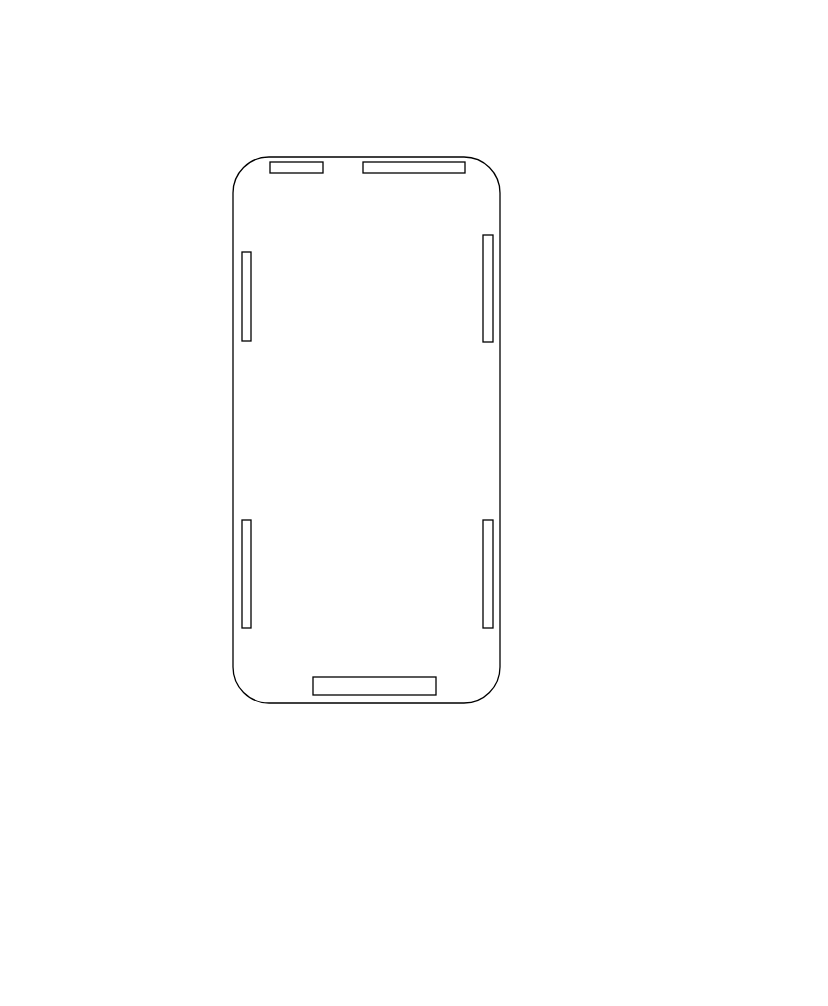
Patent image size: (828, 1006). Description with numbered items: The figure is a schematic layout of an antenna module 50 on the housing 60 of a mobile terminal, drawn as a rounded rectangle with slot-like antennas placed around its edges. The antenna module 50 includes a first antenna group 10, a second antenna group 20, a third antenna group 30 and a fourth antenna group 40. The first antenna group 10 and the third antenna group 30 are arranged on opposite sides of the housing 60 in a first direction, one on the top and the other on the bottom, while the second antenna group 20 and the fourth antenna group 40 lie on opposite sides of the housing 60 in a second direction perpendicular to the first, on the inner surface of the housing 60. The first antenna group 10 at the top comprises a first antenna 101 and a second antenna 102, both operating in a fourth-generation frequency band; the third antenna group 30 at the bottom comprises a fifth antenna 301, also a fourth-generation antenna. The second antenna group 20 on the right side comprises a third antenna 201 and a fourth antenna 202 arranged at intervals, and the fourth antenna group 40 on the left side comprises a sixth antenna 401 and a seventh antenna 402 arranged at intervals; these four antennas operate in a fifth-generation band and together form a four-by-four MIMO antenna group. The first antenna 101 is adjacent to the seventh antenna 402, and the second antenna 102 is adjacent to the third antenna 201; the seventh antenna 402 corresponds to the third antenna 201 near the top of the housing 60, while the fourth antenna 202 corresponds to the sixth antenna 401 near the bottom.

The antenna module 50 is at (313, 52).
The housing 60 is at (247, 213).
The first antenna group 10 is at (455, 70).
The first antenna 101 is at (295, 165).
The second antenna 102 is at (412, 165).
The second antenna group 20 is at (605, 357).
The third antenna 201 is at (487, 310).
The fourth antenna 202 is at (487, 535).
The third antenna group 30 is at (376, 700).
The fifth antenna 301 is at (323, 686).
The fourth antenna group 40 is at (133, 392).
The sixth antenna 401 is at (247, 548).
The seventh antenna 402 is at (247, 323).